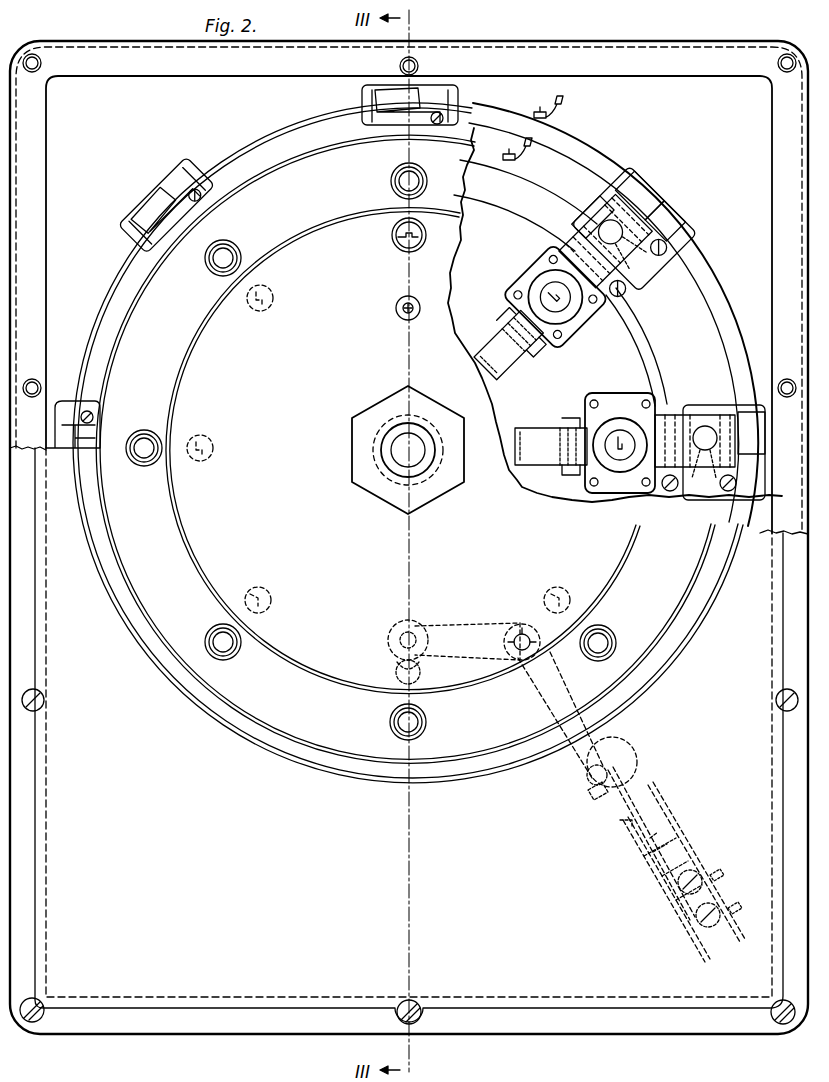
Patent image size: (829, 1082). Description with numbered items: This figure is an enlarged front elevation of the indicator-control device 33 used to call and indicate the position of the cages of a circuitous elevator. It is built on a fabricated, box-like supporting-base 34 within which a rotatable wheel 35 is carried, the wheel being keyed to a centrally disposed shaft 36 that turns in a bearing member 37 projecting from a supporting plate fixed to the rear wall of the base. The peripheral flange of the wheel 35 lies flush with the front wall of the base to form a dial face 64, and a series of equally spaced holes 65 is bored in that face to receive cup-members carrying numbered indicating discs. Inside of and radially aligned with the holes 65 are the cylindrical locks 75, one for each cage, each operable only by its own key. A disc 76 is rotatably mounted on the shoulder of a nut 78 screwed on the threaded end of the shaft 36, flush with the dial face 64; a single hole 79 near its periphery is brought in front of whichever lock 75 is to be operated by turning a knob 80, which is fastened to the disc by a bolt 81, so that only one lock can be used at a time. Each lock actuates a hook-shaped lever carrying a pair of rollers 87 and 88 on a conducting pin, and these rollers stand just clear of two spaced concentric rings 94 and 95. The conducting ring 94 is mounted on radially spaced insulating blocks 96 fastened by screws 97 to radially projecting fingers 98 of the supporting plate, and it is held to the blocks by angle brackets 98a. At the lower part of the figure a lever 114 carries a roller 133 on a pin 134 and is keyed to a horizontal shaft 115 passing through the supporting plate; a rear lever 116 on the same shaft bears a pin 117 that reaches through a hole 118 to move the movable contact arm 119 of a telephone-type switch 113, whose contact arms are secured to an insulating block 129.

The indicator-control device 33 is at (668, 34).
The supporting-base 34 is at (128, 1034).
The rotatable wheel 35 is at (637, 348).
The shaft 36 is at (392, 452).
The bearing member 37 is at (385, 482).
The dial face 64 is at (460, 180).
The holes 65 is at (428, 173).
The locks 75 is at (616, 402).
The disc 76 is at (482, 410).
The nut 78 is at (365, 412).
The hole 79 is at (392, 236).
The knob 80 is at (396, 308).
The bolt 81 is at (404, 315).
The roller 87 is at (757, 398).
The roller 88 is at (658, 495).
The ring 94 is at (563, 136).
The ring 95 is at (540, 206).
The insulating blocks 96 is at (633, 293).
The screws 97 is at (655, 495).
The radially projecting fingers 98 is at (628, 160).
The angle brackets 98a is at (675, 212).
The switch 113 is at (722, 836).
The lever 114 is at (428, 625).
The shaft 115 is at (518, 628).
The lever 116 is at (560, 672).
The pin 117 is at (590, 782).
The hole 118 is at (632, 752).
The movable contact arm 119 is at (650, 845).
The insulating block 129 is at (722, 930).
The roller 133 is at (395, 625).
The pin 134 is at (400, 640).